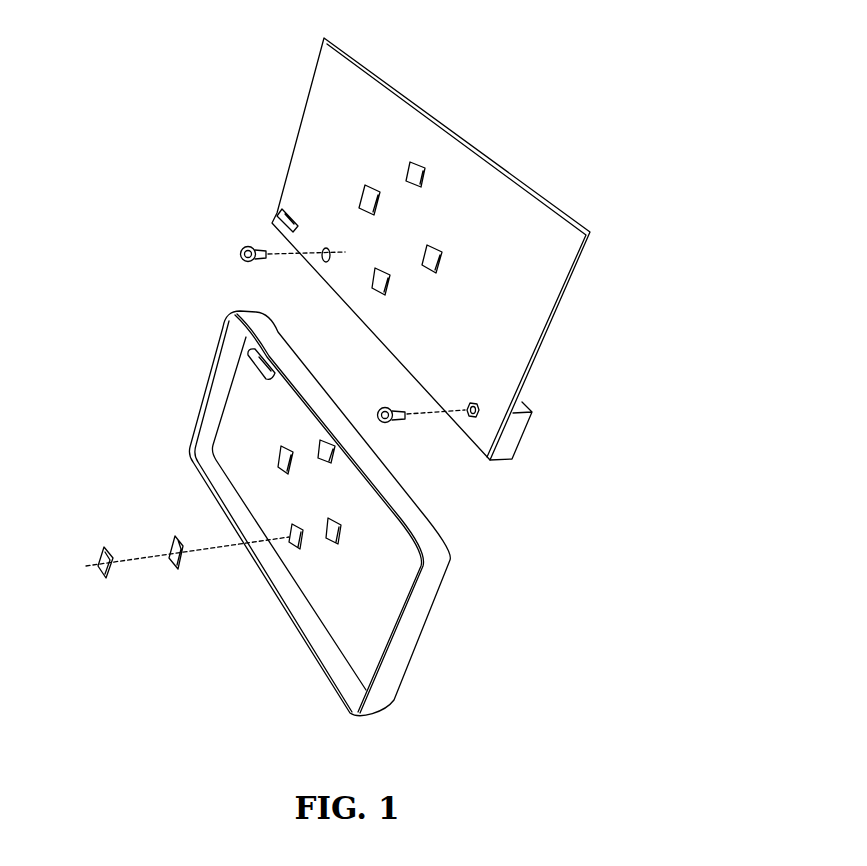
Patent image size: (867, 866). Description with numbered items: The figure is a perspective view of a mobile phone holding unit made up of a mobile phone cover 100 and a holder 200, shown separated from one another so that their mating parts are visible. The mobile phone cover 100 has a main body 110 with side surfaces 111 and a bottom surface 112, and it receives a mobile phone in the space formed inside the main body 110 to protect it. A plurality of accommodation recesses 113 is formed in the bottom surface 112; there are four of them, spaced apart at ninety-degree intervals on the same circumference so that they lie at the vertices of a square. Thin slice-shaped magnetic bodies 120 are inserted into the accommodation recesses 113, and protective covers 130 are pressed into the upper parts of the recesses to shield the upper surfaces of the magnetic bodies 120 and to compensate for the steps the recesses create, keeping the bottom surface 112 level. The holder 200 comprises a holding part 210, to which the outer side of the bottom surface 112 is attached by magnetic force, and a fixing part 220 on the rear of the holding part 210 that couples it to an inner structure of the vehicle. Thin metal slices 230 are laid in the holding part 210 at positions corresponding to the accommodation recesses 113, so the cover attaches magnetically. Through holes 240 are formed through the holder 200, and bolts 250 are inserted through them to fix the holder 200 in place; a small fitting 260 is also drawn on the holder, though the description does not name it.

The mobile phone cover 100 is at (203, 380).
The main body 110 is at (289, 720).
The side surfaces 111 is at (333, 655).
The bottom surface 112 is at (330, 604).
The accommodation recesses 113 is at (299, 548).
The magnetic bodies 120 is at (174, 573).
The protective covers 130 is at (98, 580).
The holder 200 is at (279, 158).
The holding part 210 is at (547, 281).
The fixing part 220 is at (513, 435).
The thin metal slices 230 is at (423, 152).
The through holes 240 is at (475, 420).
The bolts 250 is at (392, 425).
The bracket 260 is at (283, 213).